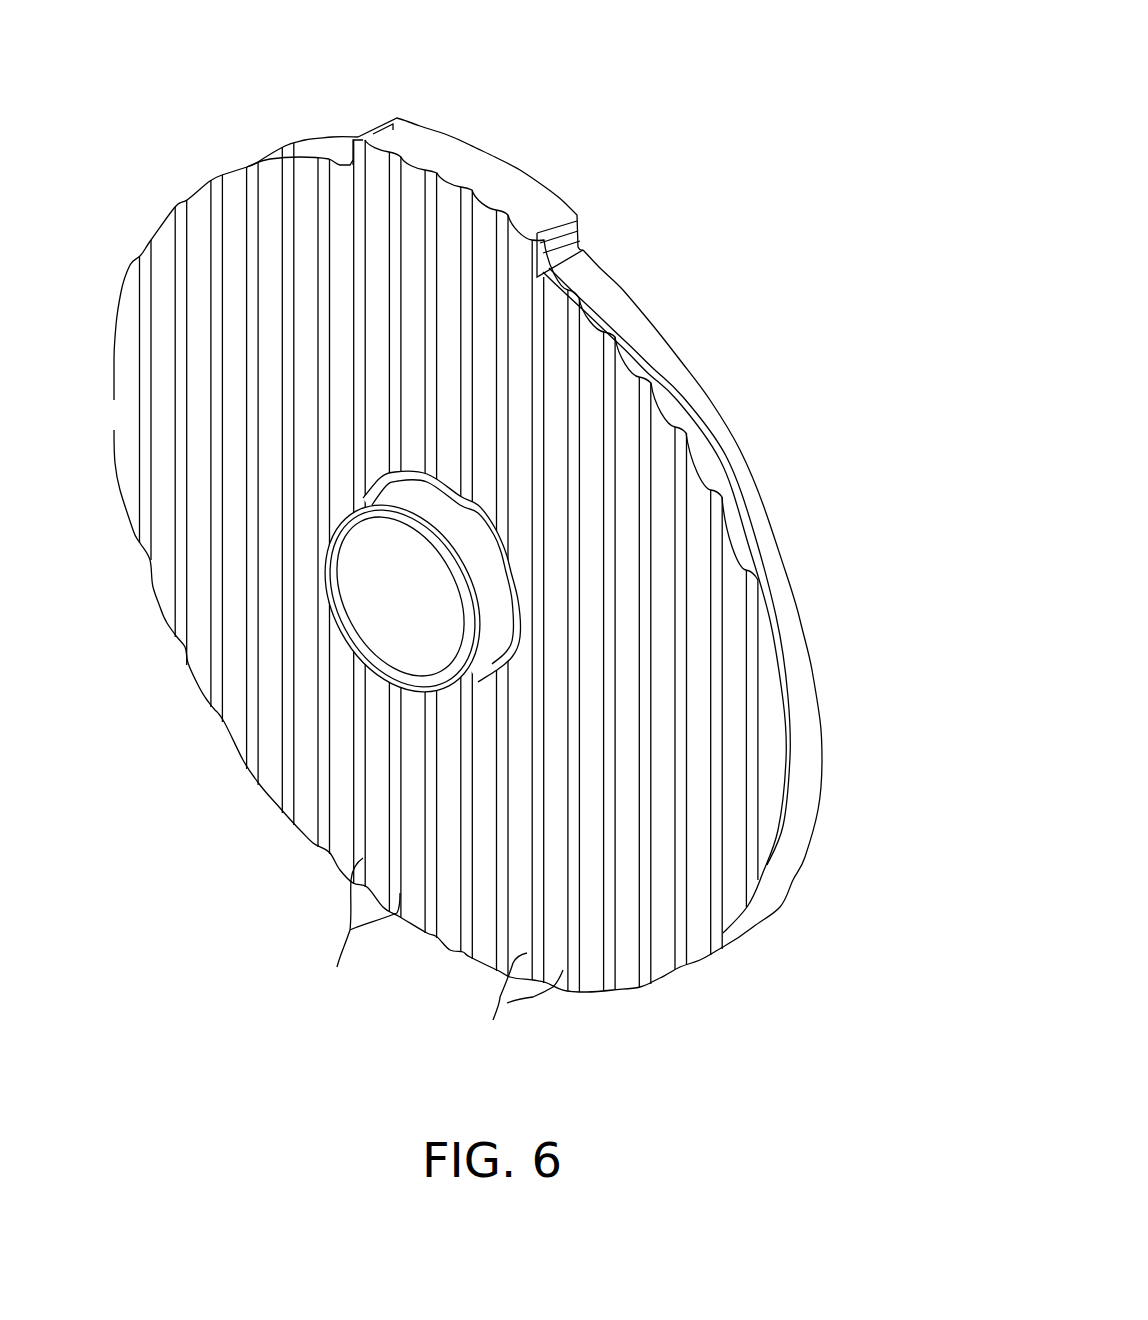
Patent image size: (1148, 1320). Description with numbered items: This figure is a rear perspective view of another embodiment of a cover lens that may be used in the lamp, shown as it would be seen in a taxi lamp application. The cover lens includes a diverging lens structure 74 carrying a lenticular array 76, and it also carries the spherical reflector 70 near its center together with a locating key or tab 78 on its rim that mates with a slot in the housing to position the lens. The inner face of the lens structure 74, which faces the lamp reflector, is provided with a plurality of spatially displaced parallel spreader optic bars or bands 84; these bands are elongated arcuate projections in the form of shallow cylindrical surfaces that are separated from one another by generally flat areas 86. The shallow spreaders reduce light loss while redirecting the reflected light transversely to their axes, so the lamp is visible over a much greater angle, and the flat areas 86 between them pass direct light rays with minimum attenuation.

The spherical reflector 70 is at (382, 602).
The diverging lens structure 74 is at (803, 575).
The lenticular array 76 is at (589, 413).
The locating key or tab 78 is at (500, 152).
The spreader optic bars or bands 84 is at (519, 1008).
The flat areas 86 is at (363, 933).